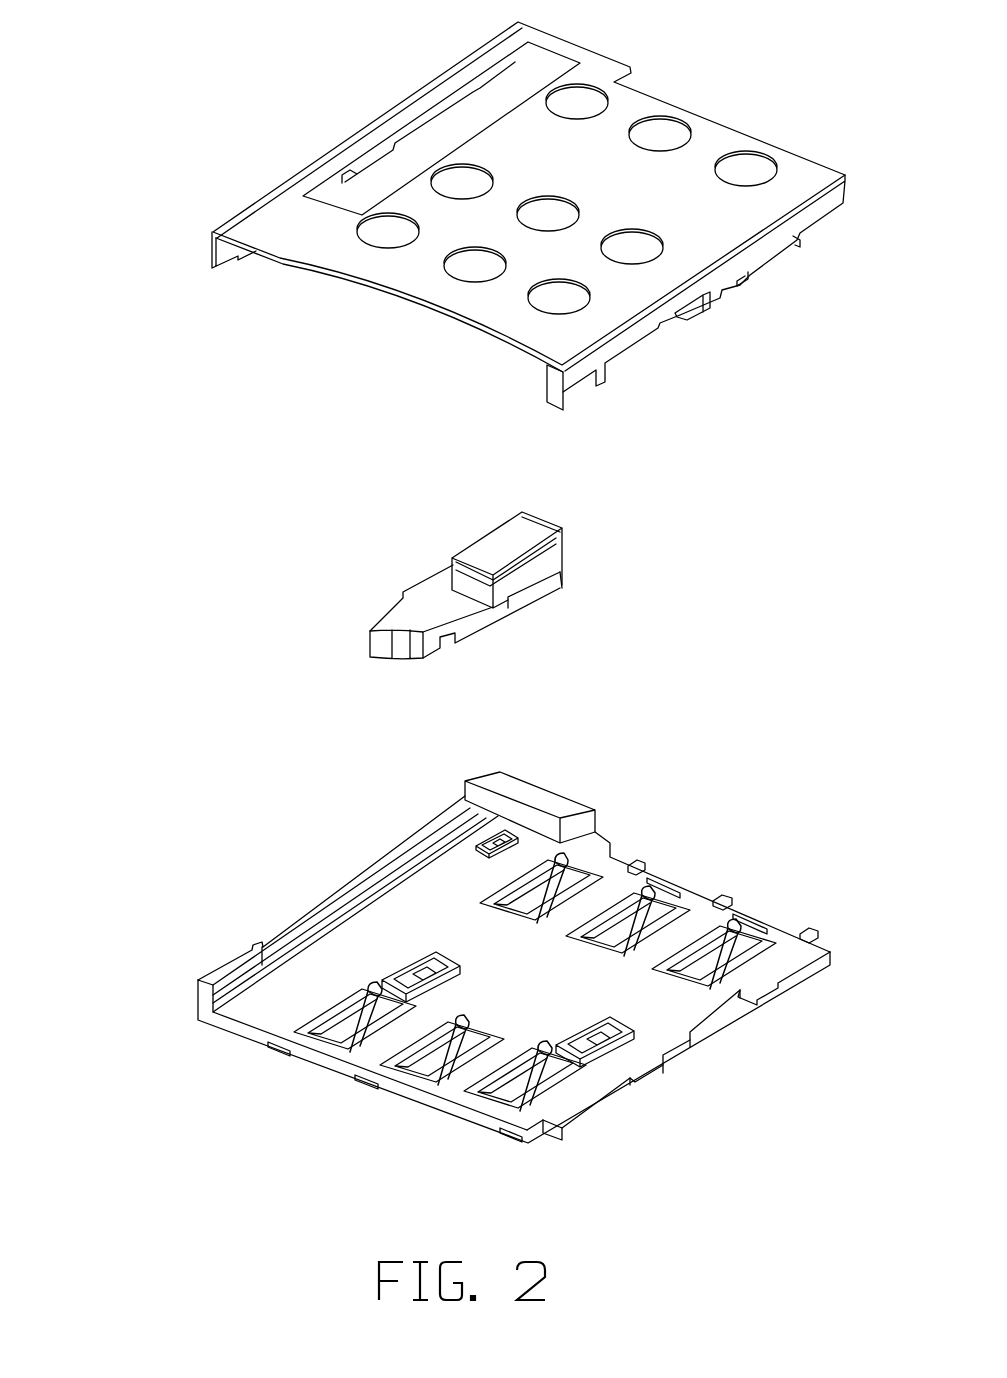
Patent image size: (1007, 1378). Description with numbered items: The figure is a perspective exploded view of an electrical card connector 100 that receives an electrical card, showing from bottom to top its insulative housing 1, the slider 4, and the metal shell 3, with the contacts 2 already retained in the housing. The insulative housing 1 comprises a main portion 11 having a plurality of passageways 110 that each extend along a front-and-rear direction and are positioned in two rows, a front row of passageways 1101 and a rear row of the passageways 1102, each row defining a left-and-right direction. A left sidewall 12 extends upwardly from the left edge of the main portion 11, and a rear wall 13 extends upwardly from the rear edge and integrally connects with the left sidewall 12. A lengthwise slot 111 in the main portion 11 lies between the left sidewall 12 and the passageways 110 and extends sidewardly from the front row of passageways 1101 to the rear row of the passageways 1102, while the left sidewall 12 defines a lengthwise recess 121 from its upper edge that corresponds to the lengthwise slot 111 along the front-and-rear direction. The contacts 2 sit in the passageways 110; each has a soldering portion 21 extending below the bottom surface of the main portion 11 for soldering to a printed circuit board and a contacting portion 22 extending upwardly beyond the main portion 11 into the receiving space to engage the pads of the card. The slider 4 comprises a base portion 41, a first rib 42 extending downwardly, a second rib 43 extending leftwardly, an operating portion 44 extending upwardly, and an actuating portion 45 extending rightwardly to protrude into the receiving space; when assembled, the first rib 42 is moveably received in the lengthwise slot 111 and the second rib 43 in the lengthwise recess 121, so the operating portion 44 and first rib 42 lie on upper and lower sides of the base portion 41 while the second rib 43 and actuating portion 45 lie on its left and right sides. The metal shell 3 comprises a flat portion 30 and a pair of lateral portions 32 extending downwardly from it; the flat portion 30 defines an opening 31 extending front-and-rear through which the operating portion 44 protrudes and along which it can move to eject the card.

The electrical card connector 100 is at (172, 20).
The insulative housing 1 is at (620, 1093).
The main portion 11 is at (650, 1003).
The left sidewall 12 is at (243, 965).
The rear wall 13 is at (548, 798).
The passageways 110 is at (333, 1185).
The front row of passageways 1101 is at (373, 1023).
The rear row of the passageways 1102 is at (522, 1044).
The lengthwise slot 111 is at (243, 982).
The lengthwise recess 121 is at (392, 865).
The contacts 2 is at (490, 1110).
The soldering portion 21 is at (723, 897).
The contacting portion 22 is at (642, 880).
The metal shell 3 is at (318, 110).
The flat portion 30 is at (687, 180).
The opening 31 is at (445, 137).
The lateral portions 32 is at (768, 252).
The slider 4 is at (418, 530).
The base portion 41 is at (413, 617).
The first rib 42 is at (477, 633).
The second rib 43 is at (423, 575).
The operating portion 44 is at (505, 547).
The actuating portion 45 is at (560, 585).